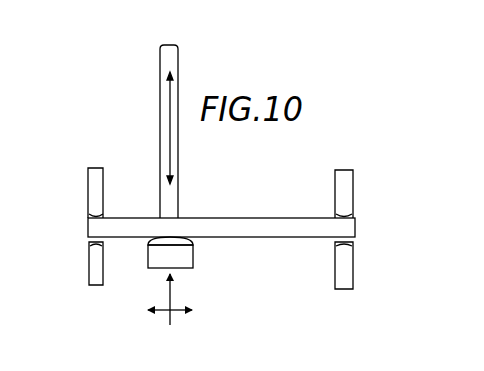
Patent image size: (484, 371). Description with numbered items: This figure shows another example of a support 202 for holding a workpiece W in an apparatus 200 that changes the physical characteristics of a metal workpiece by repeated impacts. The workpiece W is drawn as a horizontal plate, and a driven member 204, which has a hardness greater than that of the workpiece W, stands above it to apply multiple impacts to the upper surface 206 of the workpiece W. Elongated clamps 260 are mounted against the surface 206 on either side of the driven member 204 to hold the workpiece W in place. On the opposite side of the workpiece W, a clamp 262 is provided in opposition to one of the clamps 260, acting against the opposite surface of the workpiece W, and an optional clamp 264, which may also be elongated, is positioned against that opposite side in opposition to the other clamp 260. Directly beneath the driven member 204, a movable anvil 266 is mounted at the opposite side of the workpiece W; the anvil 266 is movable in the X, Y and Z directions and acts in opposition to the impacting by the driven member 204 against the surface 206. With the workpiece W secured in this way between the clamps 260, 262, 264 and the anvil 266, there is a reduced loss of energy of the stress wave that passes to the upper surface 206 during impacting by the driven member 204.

The apparatus 200 is at (186, 55).
The support 202 is at (367, 178).
The driven member 204 is at (158, 118).
The surface 206 is at (134, 217).
The clamps 260 is at (88, 178).
The clamp 262 is at (96, 285).
The optional clamp 264 is at (353, 268).
The movable anvil 266 is at (193, 255).
The workpiece W is at (260, 211).